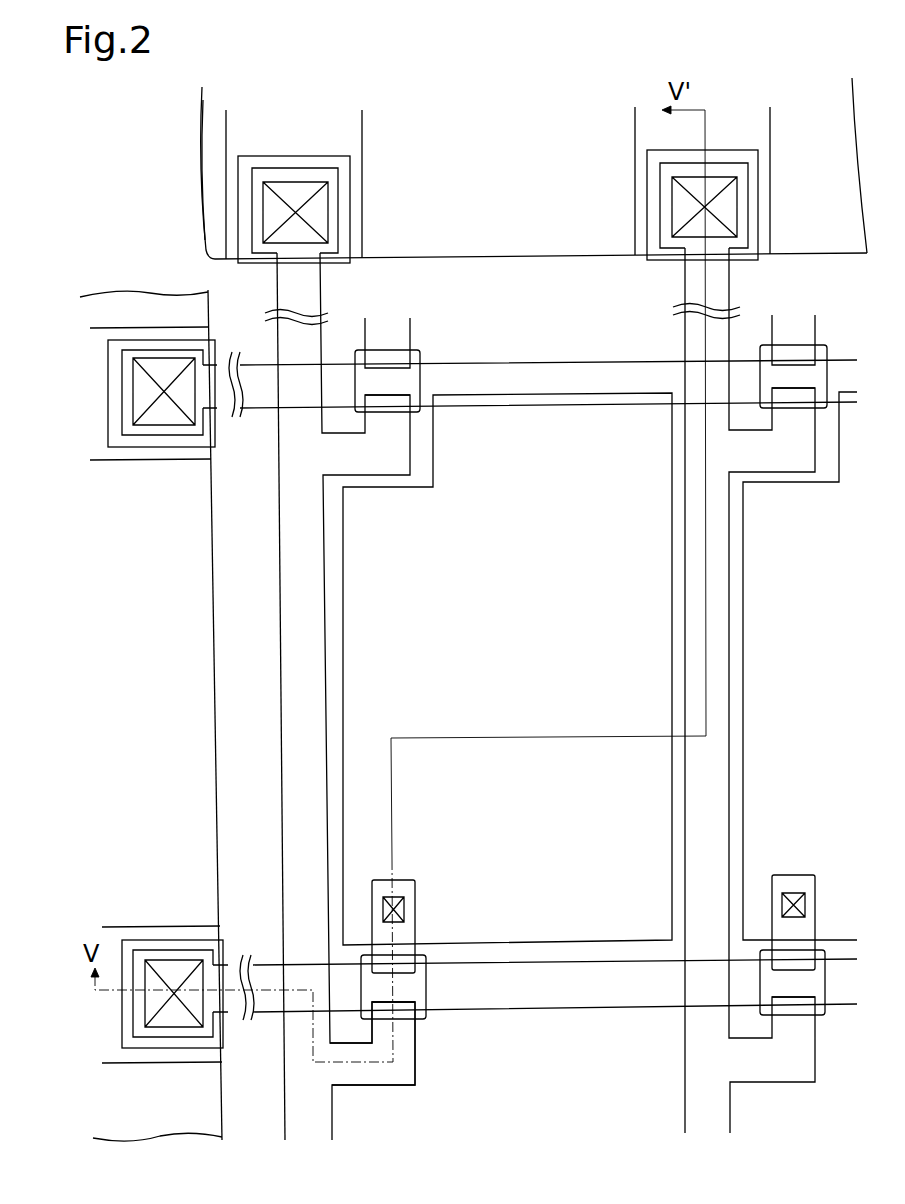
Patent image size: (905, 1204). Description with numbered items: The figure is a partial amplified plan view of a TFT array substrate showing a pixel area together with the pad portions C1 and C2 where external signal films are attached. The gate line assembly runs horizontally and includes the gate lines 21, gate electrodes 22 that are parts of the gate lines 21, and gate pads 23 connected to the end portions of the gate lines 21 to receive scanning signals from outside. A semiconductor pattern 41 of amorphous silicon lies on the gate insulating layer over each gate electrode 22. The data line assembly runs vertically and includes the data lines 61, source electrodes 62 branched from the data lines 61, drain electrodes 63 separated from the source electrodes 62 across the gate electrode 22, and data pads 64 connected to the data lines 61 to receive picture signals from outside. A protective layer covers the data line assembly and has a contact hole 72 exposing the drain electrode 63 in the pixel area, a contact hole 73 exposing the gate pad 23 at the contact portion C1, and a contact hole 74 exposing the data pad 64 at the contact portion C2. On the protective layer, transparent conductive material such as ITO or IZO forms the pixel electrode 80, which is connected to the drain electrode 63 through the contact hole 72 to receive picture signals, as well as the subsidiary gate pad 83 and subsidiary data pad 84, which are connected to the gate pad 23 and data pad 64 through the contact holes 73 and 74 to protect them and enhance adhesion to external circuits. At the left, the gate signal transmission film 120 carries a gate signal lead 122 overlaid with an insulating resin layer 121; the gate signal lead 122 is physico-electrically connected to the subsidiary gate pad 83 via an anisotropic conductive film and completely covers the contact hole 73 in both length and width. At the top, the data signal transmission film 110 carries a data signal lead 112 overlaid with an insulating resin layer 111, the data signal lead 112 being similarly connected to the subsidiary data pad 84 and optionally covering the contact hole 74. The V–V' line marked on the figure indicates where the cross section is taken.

The gate line 21 is at (610, 1006).
The gate electrode 22 is at (407, 1013).
The gate pad 23 is at (153, 1037).
The semiconductor pattern 41 is at (427, 992).
The data line 61 is at (283, 728).
The source electrode 62 is at (375, 1090).
The drain electrode 63 is at (415, 928).
The data pad 64 is at (748, 177).
The contact hole 72 is at (404, 908).
The contact hole 73 is at (188, 1028).
The contact hole 74 is at (737, 207).
The pixel electrode 80 is at (672, 640).
The subsidiary gate pad 83 is at (223, 1048).
The subsidiary data pad 84 is at (758, 243).
The data signal transmission film 110 is at (198, 133).
The insulating resin layer 111 is at (205, 178).
The data signal lead 112 is at (366, 150).
The gate signal transmission film 120 is at (168, 291).
The insulating resin layer 121 is at (150, 305).
The gate signal lead 122 is at (140, 460).
The contact portion C1 is at (97, 403).
The contact portion C2 is at (368, 198).